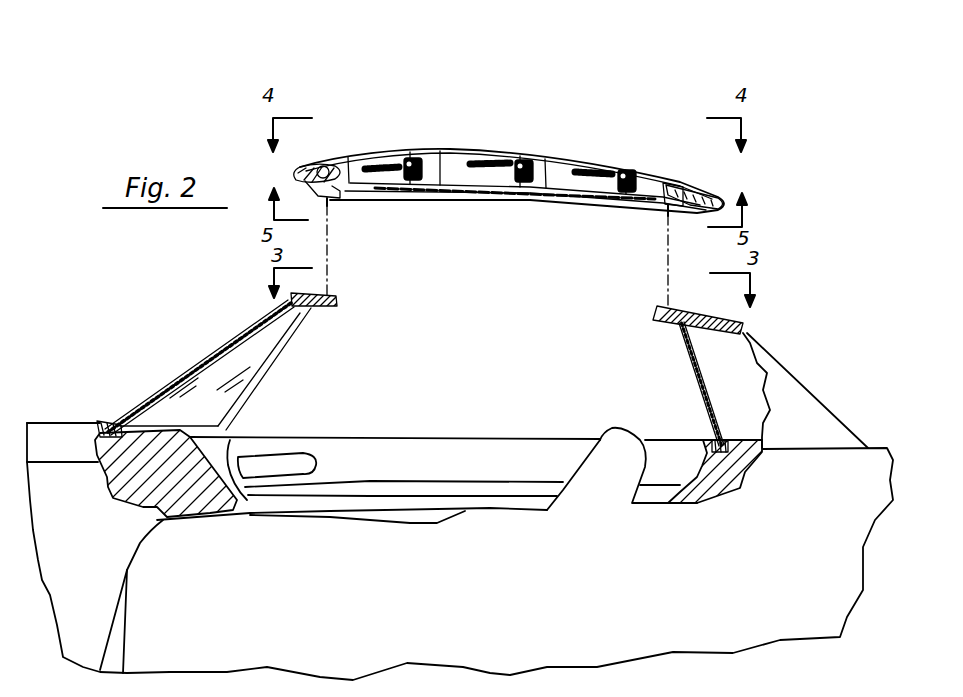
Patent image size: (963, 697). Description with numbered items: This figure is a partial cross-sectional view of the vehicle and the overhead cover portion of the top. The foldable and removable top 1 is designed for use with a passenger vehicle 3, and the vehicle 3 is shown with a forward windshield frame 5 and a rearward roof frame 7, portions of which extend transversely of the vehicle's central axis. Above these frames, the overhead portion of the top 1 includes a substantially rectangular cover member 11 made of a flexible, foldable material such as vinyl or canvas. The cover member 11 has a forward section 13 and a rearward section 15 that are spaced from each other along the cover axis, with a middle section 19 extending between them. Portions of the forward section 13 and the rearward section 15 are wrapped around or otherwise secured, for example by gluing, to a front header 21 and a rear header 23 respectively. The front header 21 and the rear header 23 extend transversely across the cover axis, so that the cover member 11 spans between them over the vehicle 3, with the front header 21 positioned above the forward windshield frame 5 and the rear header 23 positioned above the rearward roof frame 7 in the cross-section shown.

The foldable and removable top 1 is at (614, 91).
The passenger vehicle 3 is at (392, 613).
The forward windshield frame 5 is at (337, 293).
The rearward roof frame 7 is at (658, 306).
The cover member 11 is at (460, 138).
The forward section 13 is at (298, 170).
The rearward section 15 is at (717, 193).
The middle section 19 is at (547, 157).
The front header 21 is at (330, 163).
The rear header 23 is at (679, 187).